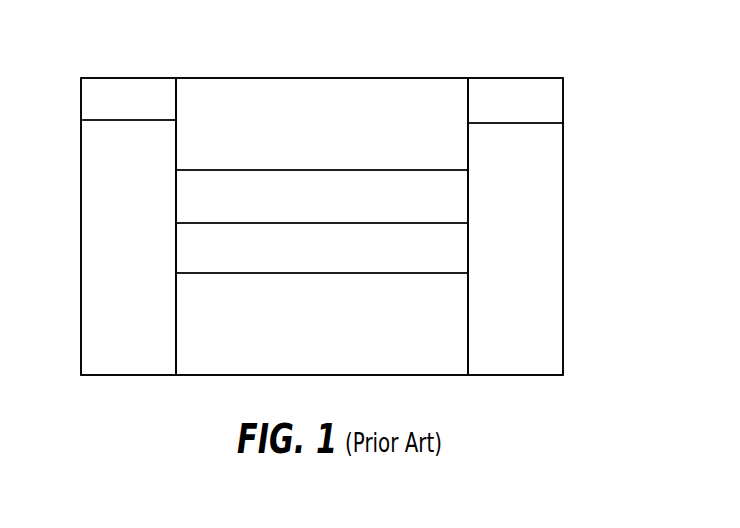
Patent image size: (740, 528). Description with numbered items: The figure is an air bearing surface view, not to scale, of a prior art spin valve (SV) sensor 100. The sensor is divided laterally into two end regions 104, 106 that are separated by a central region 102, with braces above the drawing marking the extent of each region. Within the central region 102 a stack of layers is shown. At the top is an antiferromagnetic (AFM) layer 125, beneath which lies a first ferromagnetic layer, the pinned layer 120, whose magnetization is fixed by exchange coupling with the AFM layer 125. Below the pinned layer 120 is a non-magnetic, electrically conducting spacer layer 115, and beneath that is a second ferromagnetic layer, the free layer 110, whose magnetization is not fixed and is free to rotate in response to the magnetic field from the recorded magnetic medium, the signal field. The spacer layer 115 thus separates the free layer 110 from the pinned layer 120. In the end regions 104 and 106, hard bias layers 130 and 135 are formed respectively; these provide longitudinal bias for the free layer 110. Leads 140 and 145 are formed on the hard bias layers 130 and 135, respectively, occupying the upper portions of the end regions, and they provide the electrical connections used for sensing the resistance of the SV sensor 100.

The SV sensor 100 is at (546, 413).
The central region 102 is at (467, 52).
The end region 104 is at (176, 52).
The end region 106 is at (469, 52).
The free layer 110 is at (464, 328).
The spacer layer 115 is at (464, 253).
The pinned layer 120 is at (464, 206).
The antiferromagnetic (AFM) layer 125 is at (464, 149).
The hard bias layer 130 is at (82, 165).
The hard bias layer 135 is at (562, 226).
The lead 140 is at (82, 101).
The lead 145 is at (562, 101).